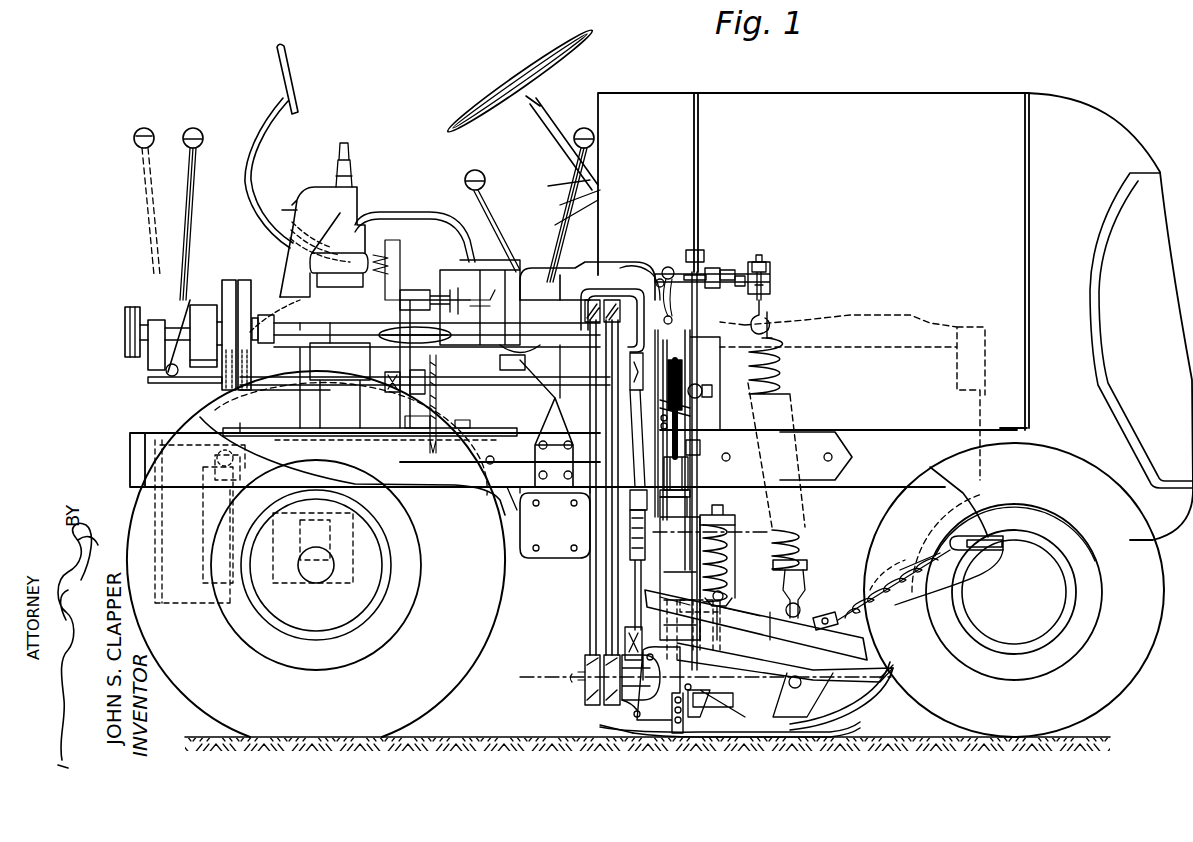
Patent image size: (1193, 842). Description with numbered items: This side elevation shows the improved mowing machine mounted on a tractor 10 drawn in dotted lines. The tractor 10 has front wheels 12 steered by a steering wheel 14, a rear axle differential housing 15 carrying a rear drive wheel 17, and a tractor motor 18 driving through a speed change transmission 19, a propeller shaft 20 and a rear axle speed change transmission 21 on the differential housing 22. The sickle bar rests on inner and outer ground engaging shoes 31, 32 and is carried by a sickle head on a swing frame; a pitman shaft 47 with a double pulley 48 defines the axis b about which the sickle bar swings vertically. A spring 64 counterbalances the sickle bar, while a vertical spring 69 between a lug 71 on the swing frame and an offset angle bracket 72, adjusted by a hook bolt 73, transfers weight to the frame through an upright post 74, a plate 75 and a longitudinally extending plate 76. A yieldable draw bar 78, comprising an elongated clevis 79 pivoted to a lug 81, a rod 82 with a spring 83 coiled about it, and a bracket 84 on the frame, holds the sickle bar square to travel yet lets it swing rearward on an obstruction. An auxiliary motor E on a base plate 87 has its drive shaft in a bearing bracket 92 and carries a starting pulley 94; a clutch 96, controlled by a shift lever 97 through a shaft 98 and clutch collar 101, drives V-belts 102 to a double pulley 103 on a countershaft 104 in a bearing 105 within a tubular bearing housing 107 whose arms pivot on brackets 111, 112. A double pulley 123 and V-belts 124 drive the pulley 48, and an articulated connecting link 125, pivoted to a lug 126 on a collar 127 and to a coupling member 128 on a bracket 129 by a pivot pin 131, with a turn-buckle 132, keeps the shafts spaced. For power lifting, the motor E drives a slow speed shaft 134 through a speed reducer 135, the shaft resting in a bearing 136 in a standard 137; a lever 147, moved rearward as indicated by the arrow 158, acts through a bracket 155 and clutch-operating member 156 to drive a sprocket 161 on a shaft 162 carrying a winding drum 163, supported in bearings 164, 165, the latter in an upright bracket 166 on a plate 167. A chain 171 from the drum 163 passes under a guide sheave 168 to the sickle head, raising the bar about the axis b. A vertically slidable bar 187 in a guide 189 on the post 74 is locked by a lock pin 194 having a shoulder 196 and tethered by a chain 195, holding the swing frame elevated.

The tractor 10 is at (926, 93).
The front wheels 12 is at (1135, 672).
The steering wheel 14 is at (566, 36).
The rear axle differential housing 15 is at (317, 578).
The rear drive wheel 17 is at (463, 684).
The tractor motor 18 is at (882, 322).
The speed change transmission 19 is at (546, 578).
The propeller shaft 20 is at (445, 497).
The rear axle speed change transmission 21 is at (182, 603).
The differential housing 22 is at (290, 618).
The inner ground engaging shoe 31 is at (878, 700).
The outer ground engaging shoe 32 is at (705, 745).
The pitman shaft 47 is at (580, 684).
The double pulley 48 is at (587, 672).
The spring 64 is at (732, 548).
The vertically disposed spring 69 is at (795, 378).
The lug 71 is at (802, 612).
The offset angle bracket 72 is at (752, 290).
The hook bolt 73 is at (772, 298).
The upright post 74 is at (650, 352).
The plate 75 is at (688, 440).
The longitudinally extending plate 76 is at (820, 445).
The yieldable draw bar 78 is at (858, 579).
The elongated clevis 79 is at (888, 568).
The lug 81 is at (835, 625).
The rod 82 is at (905, 548).
The spring 83 is at (885, 598).
The bracket 84 is at (962, 545).
The base plate 87 is at (280, 432).
The bearing bracket 92 is at (160, 300).
The starting pulley 94 is at (125, 313).
The clutch 96 is at (207, 310).
The shift lever 97 is at (172, 160).
The shaft 98 is at (172, 380).
The clutch collar 101 is at (160, 268).
The V-belts 102 is at (238, 285).
The double pulley 103 is at (226, 295).
The countershaft 104 is at (445, 334).
The bearing 105 is at (268, 318).
The tubular bearing housing 107 is at (298, 330).
The bracket 111 is at (405, 418).
The bracket 112 is at (540, 417).
The double pulley 123 is at (628, 278).
The V-belts 124 is at (590, 620).
The articulated connecting link 125 is at (622, 567).
The lug 126 is at (622, 652).
The collar 127 is at (622, 700).
The coupling member 128 is at (660, 422).
The bracket 129 is at (628, 275).
The pivot pin 131 is at (648, 318).
The turn-buckle 132 is at (622, 518).
The slow speed shaft 134 is at (420, 300).
The speed reducer 135 is at (378, 258).
The bearing 136 is at (553, 283).
The standard 137 is at (540, 265).
The lever 147 is at (568, 210).
The bracket 155 is at (465, 272).
The clutch-operating member 156 is at (482, 332).
The arm 158 is at (548, 168).
The sprocket 161 is at (433, 437).
The shaft 162 is at (478, 382).
The winding drum 163 is at (700, 358).
The bearing 164 is at (388, 384).
The bearing 165 is at (683, 365).
The upright bracket 166 is at (700, 408).
The plate 167 is at (688, 455).
The guide sheave 168 is at (684, 475).
The chain 171 is at (688, 520).
The vertically slidable bar 187 is at (692, 248).
The guide 189 is at (712, 392).
The locking pin 194 is at (738, 278).
The chain 195 is at (668, 268).
The shoulder 196 is at (725, 272).
The auxiliary motor E is at (320, 207).
The axis b— b is at (699, 666).